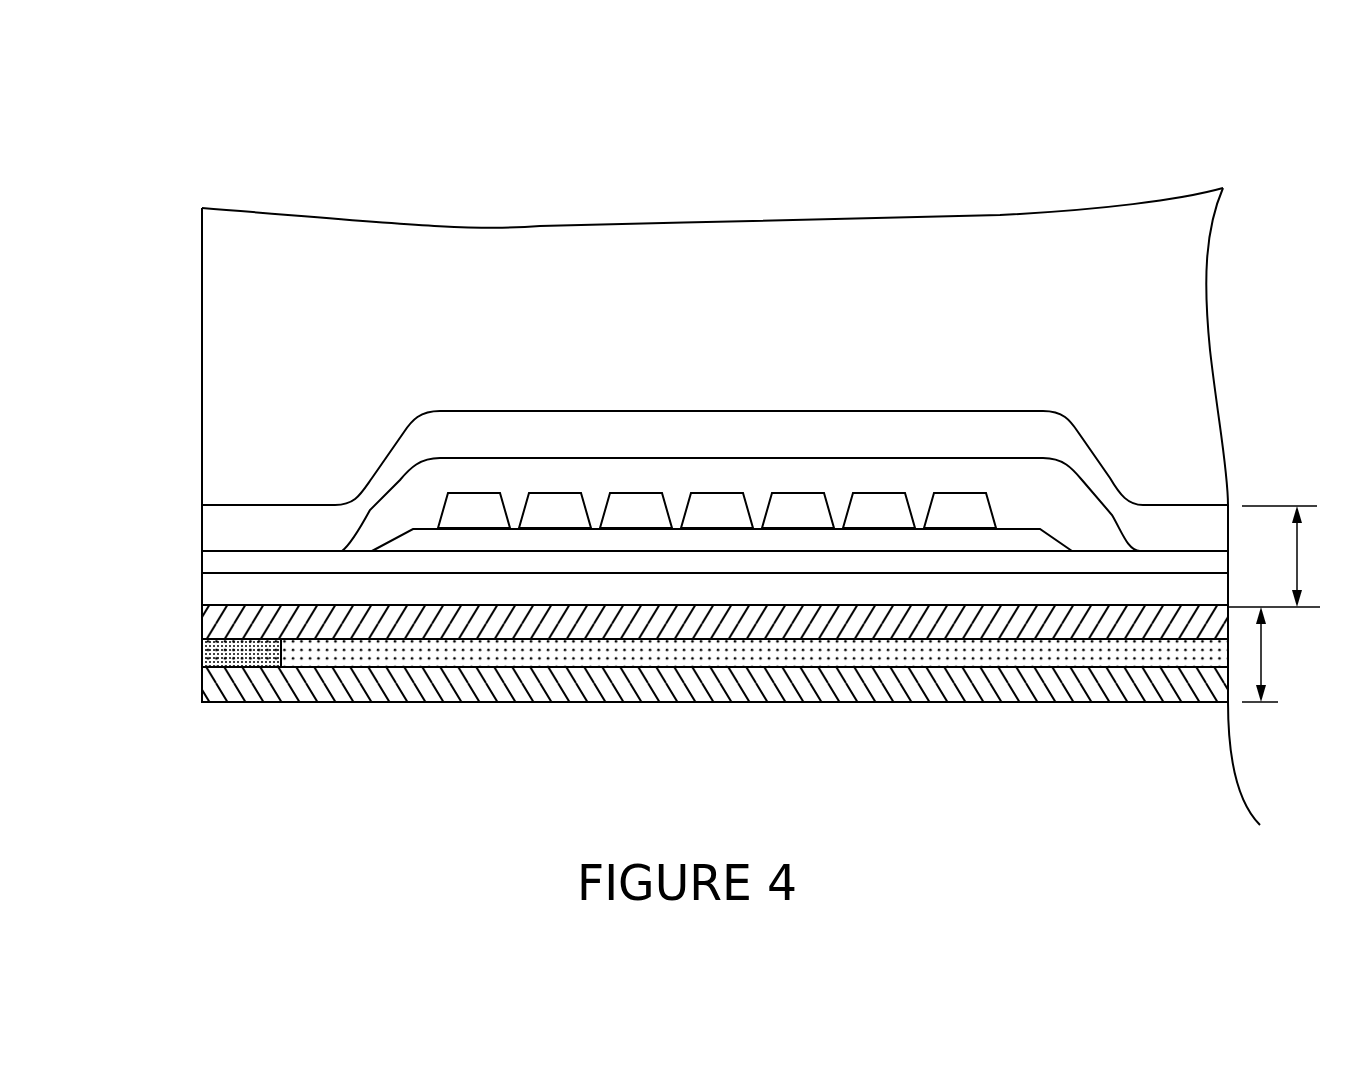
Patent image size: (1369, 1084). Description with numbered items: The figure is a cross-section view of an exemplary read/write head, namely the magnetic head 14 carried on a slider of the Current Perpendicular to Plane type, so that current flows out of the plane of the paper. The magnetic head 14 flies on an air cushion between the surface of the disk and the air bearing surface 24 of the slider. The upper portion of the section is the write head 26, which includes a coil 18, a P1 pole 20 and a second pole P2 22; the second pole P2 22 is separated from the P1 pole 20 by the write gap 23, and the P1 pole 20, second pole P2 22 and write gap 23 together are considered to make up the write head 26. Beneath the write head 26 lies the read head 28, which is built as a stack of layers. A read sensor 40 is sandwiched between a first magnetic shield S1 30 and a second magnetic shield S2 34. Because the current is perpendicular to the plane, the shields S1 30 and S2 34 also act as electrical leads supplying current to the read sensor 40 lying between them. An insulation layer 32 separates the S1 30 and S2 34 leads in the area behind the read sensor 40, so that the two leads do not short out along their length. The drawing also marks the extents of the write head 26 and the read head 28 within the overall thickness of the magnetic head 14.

The magnetic head 14 is at (149, 237).
The air bearing surface 24 is at (182, 317).
The P1 pole 20 is at (525, 425).
The second pole P2 22 is at (223, 525).
The write gap 23 is at (202, 564).
The coil 18 is at (542, 507).
The second magnetic shield S2 34 is at (202, 617).
The insulation layer 32 is at (427, 652).
The read sensor 40 is at (212, 648).
The first magnetic shield S1 30 is at (223, 678).
The write head 26 is at (1298, 565).
The read head 28 is at (1260, 665).